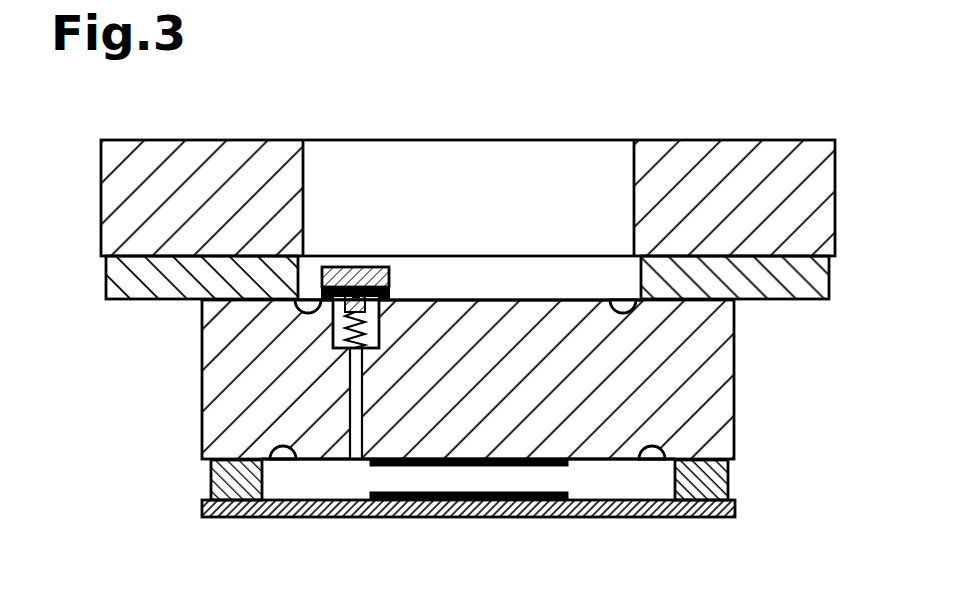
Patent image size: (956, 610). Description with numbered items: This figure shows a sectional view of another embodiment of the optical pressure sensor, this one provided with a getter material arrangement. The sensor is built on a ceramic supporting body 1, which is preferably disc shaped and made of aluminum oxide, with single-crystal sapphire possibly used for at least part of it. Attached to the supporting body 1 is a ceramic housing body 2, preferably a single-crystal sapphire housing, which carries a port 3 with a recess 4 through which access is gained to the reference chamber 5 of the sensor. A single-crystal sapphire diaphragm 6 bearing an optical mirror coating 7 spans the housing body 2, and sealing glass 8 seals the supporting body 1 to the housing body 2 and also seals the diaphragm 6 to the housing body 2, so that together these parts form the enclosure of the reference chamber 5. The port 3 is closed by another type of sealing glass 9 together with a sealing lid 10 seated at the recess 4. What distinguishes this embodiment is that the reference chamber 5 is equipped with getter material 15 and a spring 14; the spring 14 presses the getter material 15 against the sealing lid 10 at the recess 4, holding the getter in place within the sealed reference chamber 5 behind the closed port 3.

The ceramic supporting body 1 is at (468, 151).
The ceramic housing body 2 is at (468, 277).
The port 3 is at (332, 457).
The recess 4 is at (373, 337).
The reference chamber 5 is at (495, 512).
The single-crystal sapphire diaphragm 6 is at (468, 533).
The optical mirror coating 7 is at (403, 466).
The sealing glass 8 is at (225, 488).
The sealing glass 9 is at (392, 255).
The sealing lid 10 is at (336, 191).
The spring 14 is at (366, 315).
The getter material 15 is at (391, 197).